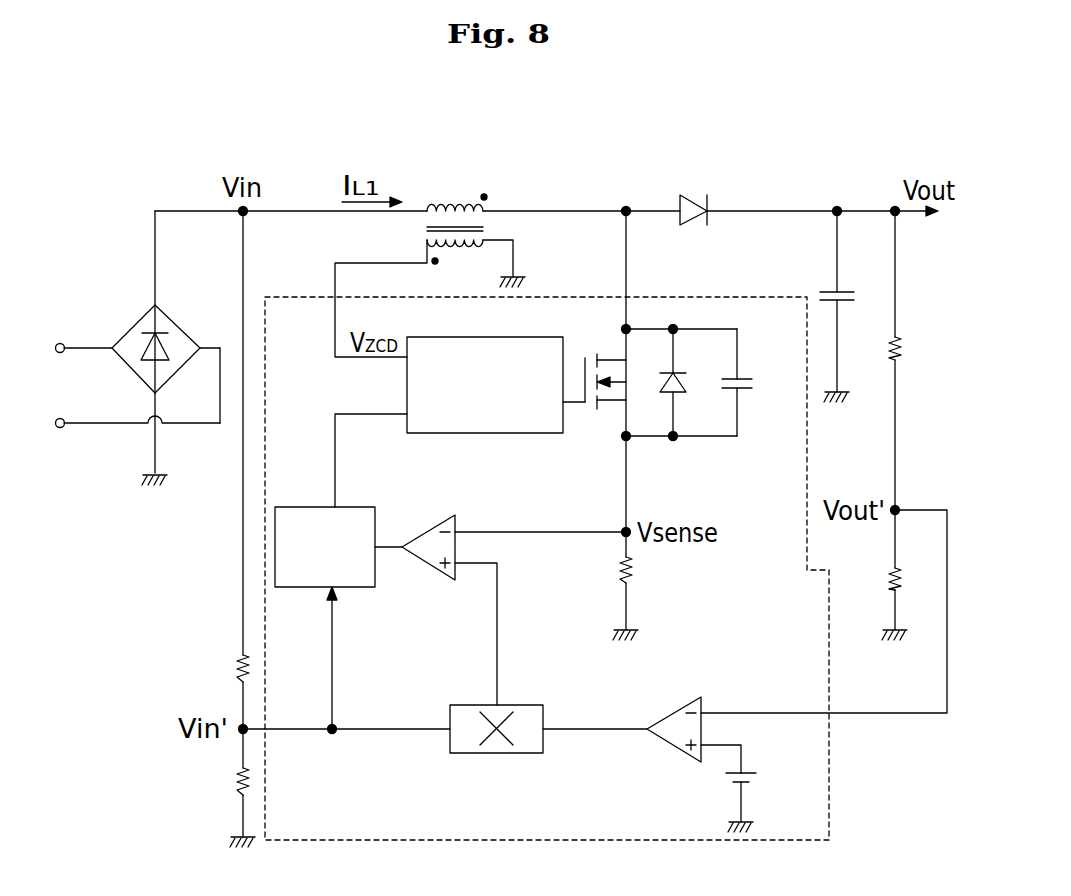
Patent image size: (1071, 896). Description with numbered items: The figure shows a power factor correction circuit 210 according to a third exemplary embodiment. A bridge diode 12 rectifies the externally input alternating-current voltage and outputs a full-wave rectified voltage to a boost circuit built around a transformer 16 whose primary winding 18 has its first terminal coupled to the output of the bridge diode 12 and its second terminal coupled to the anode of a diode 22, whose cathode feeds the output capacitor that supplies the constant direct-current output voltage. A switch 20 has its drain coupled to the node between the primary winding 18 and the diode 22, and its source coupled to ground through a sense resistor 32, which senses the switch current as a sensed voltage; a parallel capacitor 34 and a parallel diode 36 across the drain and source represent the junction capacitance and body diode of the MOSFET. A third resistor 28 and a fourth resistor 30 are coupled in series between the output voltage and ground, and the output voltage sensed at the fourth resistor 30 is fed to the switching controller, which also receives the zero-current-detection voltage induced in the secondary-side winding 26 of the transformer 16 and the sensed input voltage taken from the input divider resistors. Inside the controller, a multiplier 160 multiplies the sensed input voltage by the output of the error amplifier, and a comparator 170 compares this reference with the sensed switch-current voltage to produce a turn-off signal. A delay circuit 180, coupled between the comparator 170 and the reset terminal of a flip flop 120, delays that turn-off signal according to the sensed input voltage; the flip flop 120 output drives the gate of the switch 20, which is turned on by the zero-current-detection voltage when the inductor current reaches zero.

The bridge diode BD 12 is at (144, 320).
The transformer 16 is at (427, 211).
The primary winding L1 18 is at (477, 208).
The switch Qsw 20 is at (589, 358).
The diode D1 22 is at (688, 225).
The secondary-side winding L2 26 is at (427, 242).
The resistor R3 28 is at (900, 355).
The resistor R4 30 is at (891, 585).
The resistor Rsense 32 is at (630, 585).
The capacitor Coss 34 is at (748, 392).
The diode Db 36 is at (676, 375).
The flip flop 120 is at (462, 337).
The multiplier 160 is at (475, 705).
The comparator Amp2 170 is at (436, 527).
The delay circuit 180 is at (315, 507).
The power factor correction circuit 210 is at (832, 128).